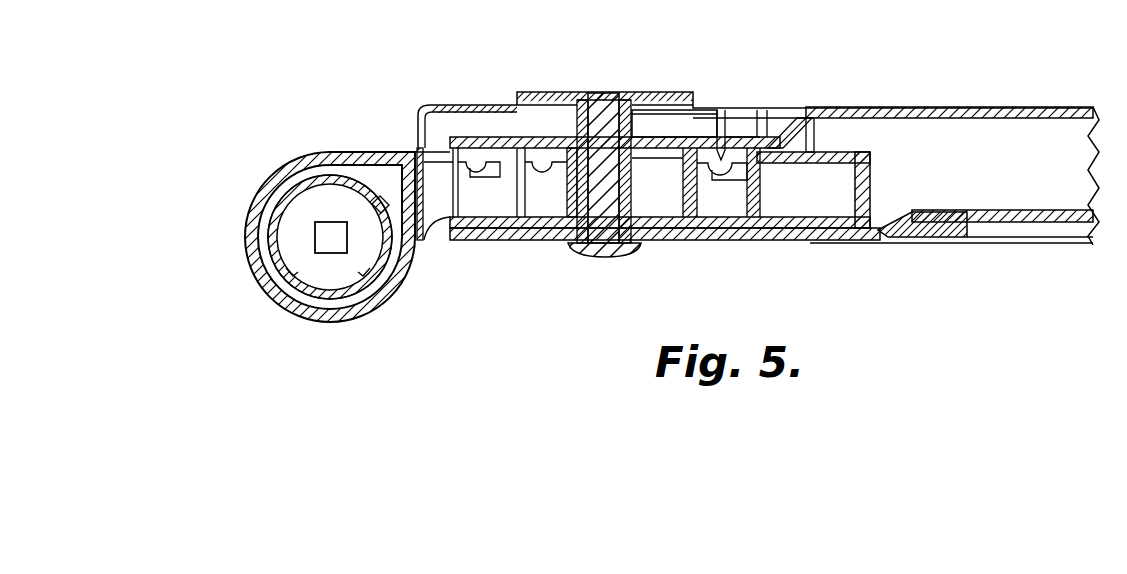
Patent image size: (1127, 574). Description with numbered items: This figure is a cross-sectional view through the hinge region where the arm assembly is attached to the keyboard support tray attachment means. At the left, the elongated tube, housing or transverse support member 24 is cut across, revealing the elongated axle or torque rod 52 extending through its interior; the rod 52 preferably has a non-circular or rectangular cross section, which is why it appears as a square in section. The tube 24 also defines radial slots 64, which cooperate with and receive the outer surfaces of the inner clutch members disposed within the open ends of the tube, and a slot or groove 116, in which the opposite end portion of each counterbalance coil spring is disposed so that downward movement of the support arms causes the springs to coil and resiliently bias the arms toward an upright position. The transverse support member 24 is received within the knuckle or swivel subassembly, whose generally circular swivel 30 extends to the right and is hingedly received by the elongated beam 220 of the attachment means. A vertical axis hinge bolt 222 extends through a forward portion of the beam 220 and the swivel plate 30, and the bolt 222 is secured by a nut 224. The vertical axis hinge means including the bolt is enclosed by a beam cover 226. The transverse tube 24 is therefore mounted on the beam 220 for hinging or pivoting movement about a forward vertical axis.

The transverse support member 24 is at (290, 275).
The swivel 30 is at (800, 147).
The torque rod 52 is at (347, 252).
The radial slots 64 is at (288, 195).
The groove 116 is at (382, 192).
The beam 220 is at (997, 106).
The hinge bolt 222 is at (610, 259).
The nut 224 is at (638, 131).
The beam cover 226 is at (541, 92).